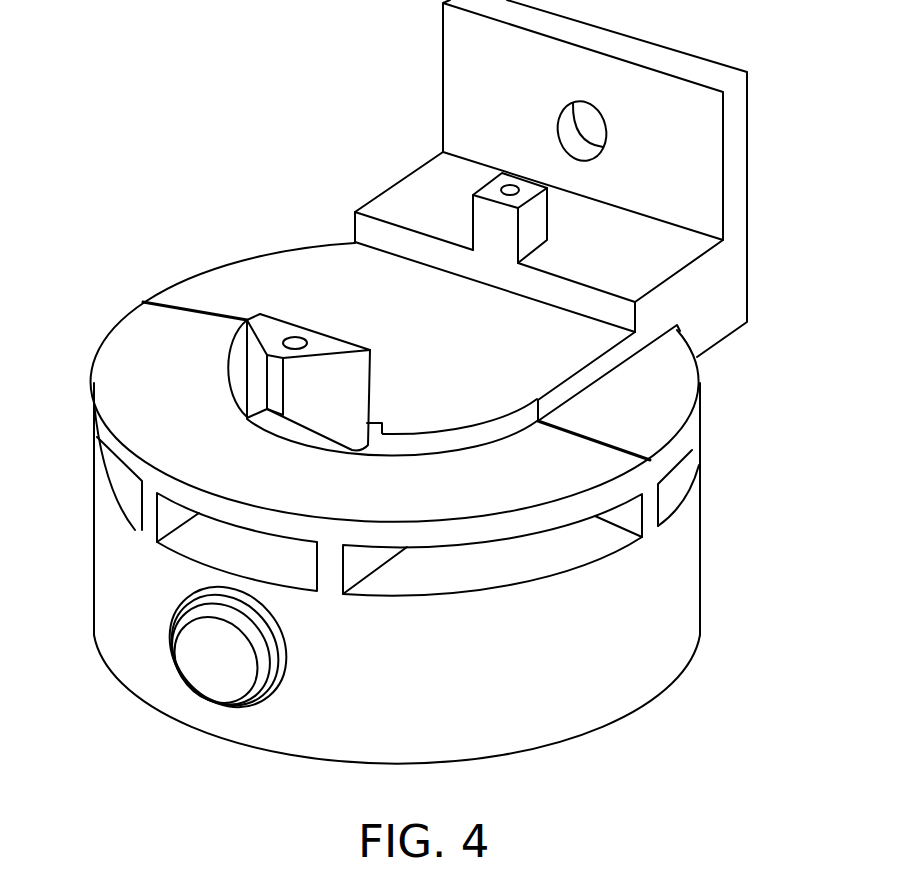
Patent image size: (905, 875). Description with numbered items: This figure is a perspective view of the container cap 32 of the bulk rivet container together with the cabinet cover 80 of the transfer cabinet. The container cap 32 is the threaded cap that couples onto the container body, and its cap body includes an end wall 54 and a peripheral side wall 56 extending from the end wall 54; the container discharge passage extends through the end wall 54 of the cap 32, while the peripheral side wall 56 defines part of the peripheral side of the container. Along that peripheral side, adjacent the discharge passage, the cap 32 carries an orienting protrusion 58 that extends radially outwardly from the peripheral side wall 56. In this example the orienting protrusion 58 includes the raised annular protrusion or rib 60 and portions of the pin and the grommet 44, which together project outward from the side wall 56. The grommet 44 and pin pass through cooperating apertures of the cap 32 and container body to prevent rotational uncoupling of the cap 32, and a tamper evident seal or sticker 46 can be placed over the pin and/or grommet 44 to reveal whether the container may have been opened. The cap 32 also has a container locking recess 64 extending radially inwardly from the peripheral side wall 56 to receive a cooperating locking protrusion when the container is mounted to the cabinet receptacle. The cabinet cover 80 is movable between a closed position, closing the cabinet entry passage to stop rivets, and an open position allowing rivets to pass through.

The container cap 32 is at (617, 684).
The grommet 44 is at (253, 698).
The tamper evident seal or sticker 46 is at (197, 637).
The end wall 54 is at (657, 410).
The peripheral side wall 56 is at (680, 585).
The orienting protrusion 58 is at (166, 676).
The raised annular protrusion or rib 60 is at (280, 673).
The container locking recess 64 is at (122, 463).
The cabinet cover 80 is at (341, 280).